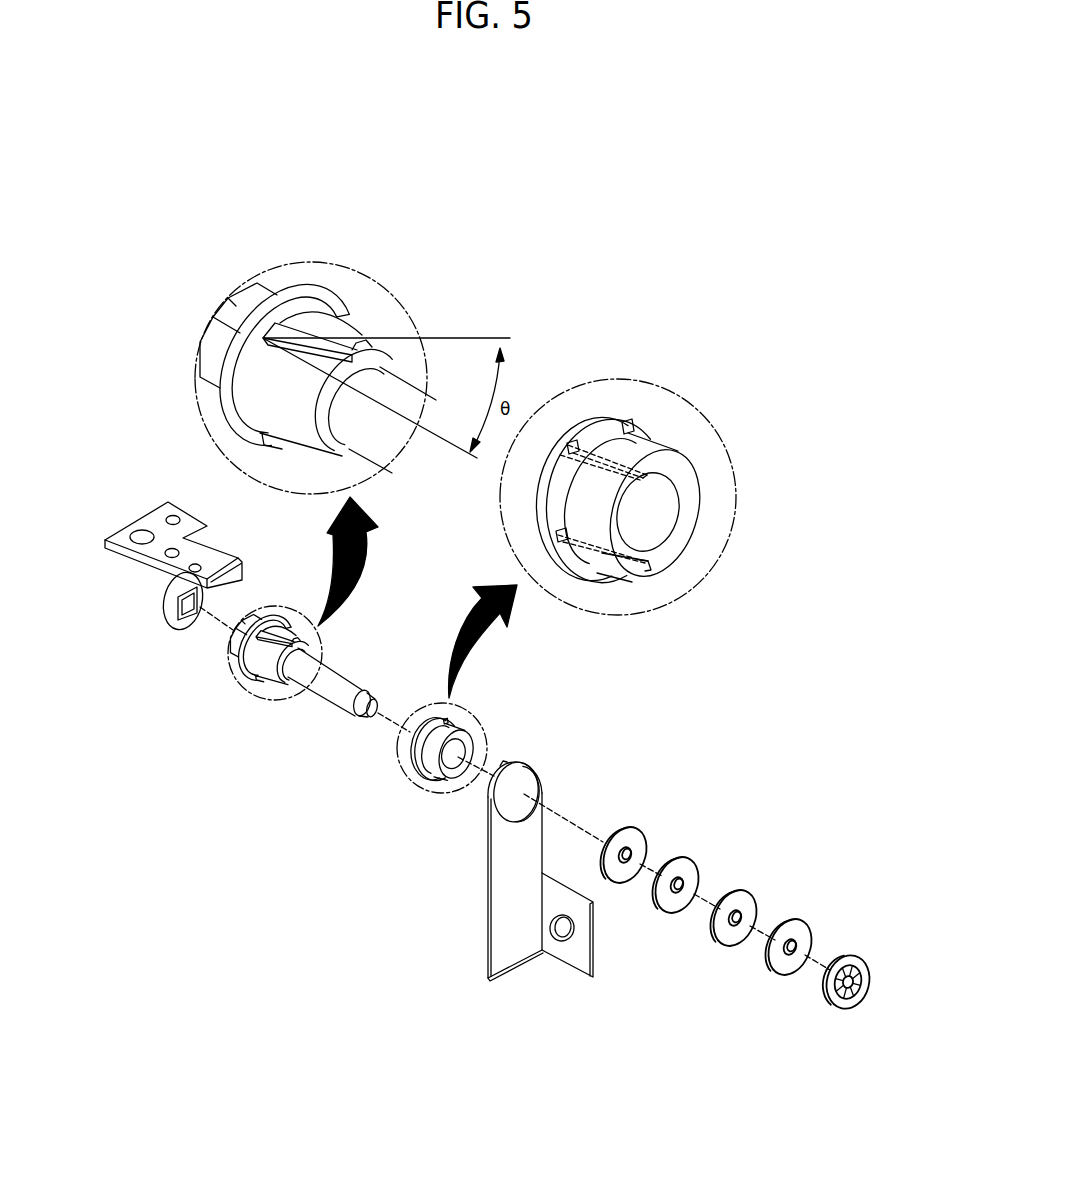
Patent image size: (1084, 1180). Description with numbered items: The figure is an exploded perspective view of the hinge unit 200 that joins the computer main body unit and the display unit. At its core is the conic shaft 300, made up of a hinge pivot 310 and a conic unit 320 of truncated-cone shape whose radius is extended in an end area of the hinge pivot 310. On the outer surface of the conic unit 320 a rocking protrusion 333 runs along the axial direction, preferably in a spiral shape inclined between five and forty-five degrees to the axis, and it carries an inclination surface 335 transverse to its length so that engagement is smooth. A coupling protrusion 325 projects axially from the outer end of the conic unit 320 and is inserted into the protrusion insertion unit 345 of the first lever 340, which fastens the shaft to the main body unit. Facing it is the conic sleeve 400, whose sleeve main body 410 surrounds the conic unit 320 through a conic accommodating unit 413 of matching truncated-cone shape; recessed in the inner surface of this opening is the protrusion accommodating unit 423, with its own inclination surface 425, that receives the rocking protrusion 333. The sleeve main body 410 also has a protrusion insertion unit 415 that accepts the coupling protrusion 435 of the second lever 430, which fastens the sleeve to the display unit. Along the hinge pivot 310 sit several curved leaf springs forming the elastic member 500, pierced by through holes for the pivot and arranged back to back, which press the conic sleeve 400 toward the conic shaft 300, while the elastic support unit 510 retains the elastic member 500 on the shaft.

The hinge unit 200 is at (650, 230).
The conic shaft 300 is at (265, 707).
The hinge pivot 310 is at (398, 401).
The conic unit 320 is at (360, 334).
The coupling protrusion 325 is at (240, 303).
The rocking protrusion 333 is at (313, 316).
The inclination surface 335 is at (370, 340).
The first lever 340 is at (150, 518).
The protrusion insertion unit 345 is at (166, 608).
The conic sleeve 400 is at (403, 788).
The sleeve main body 410 is at (688, 477).
The conic accommodating unit 413 is at (670, 510).
The protrusion insertion unit 415 is at (624, 423).
The protrusion accommodating unit 423 is at (652, 556).
The inclination surface 425 is at (654, 554).
The second lever 430 is at (488, 922).
The coupling protrusion 435 is at (504, 759).
The elastic member 500 is at (810, 914).
The elastic support unit 510 is at (858, 958).